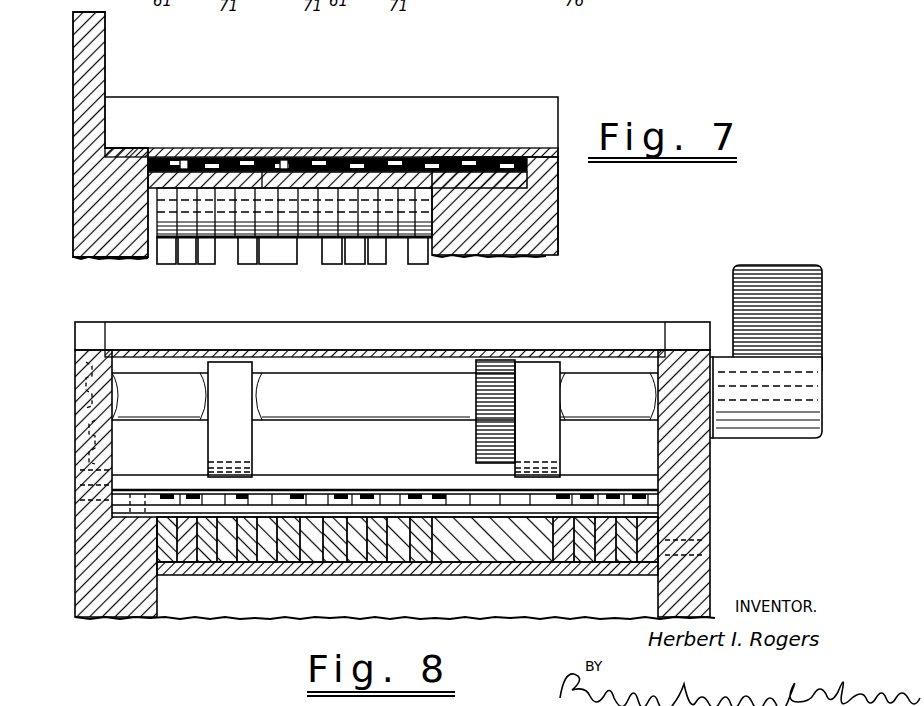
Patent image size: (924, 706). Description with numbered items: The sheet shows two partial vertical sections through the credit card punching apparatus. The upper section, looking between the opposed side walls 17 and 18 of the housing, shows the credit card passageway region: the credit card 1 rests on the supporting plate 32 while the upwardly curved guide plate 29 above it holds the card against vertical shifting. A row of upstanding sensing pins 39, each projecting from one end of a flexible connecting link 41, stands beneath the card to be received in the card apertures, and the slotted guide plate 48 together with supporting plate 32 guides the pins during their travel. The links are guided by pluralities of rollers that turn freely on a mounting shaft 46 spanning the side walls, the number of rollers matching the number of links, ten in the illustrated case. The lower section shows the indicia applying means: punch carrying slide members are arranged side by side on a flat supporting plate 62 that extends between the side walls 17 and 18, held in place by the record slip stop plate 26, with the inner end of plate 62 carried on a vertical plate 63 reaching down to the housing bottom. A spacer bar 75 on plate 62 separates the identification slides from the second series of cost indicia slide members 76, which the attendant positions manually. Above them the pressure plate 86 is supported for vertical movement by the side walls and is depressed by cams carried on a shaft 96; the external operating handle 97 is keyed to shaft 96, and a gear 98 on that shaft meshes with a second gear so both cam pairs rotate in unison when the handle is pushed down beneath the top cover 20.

In FIG. 7, the credit card 1 is at (558, 162).
In FIG. 7, the side wall 17 is at (96, 178).
In FIG. 8, the side wall 17 is at (75, 589).
In FIG. 7, the side wall 18 is at (542, 220).
In FIG. 8, the side wall 18 is at (700, 444).
In FIG. 8, the top cover 20 is at (447, 345).
In FIG. 8, the stop plate 26 is at (270, 562).
In FIG. 7, the guide plate 29 is at (222, 131).
In FIG. 7, the supporting plate 32 is at (262, 159).
In FIG. 7, the sensing member 39 is at (340, 160).
In FIG. 7, the flexible connecting link 41 is at (273, 258).
In FIG. 7, the mounting shaft 46 is at (148, 260).
In FIG. 7, the slotted guide plate 48 is at (470, 161).
In FIG. 8, the supporting plate 62 is at (466, 574).
In FIG. 8, the vertical plate 63 is at (616, 608).
In FIG. 8, the spacer bar 75 is at (488, 554).
In FIG. 8, the slide member 76 is at (624, 572).
In FIG. 8, the pressure plate 86 is at (280, 506).
In FIG. 8, the shaft 96 is at (366, 406).
In FIG. 8, the operating handle 97 is at (776, 292).
In FIG. 8, the gear 98 is at (490, 399).